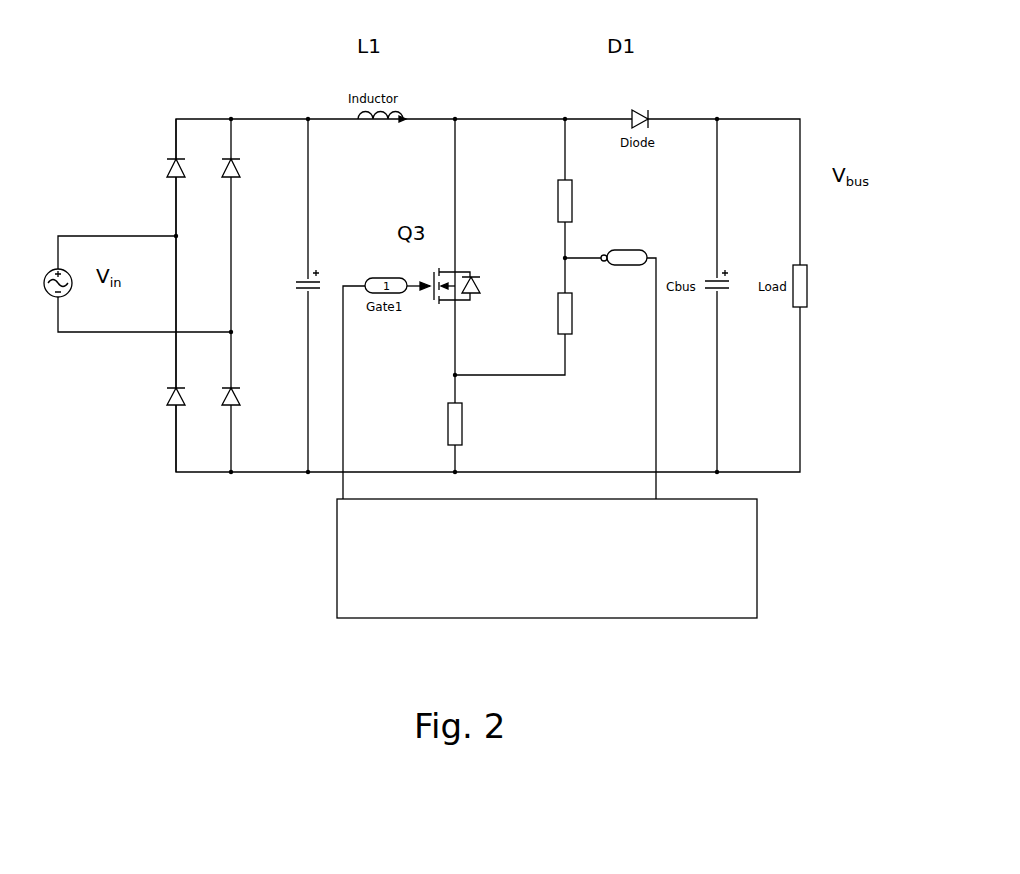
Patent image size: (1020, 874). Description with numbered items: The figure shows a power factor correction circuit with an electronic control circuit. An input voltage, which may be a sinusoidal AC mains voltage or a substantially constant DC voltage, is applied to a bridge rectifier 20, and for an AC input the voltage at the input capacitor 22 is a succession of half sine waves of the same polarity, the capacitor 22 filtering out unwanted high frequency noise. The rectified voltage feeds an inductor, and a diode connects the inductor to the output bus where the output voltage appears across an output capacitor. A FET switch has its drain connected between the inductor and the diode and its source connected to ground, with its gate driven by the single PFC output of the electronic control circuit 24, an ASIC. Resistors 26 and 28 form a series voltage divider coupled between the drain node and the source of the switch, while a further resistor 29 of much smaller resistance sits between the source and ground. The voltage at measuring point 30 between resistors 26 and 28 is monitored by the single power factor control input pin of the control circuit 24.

The bridge rectifier 20 is at (202, 255).
The input capacitor 22 is at (324, 254).
The electronic control circuit 24 is at (337, 578).
The resistor 26 is at (572, 200).
The resistor 28 is at (575, 315).
The further resistor 29 is at (465, 417).
The measuring point 30 is at (556, 255).